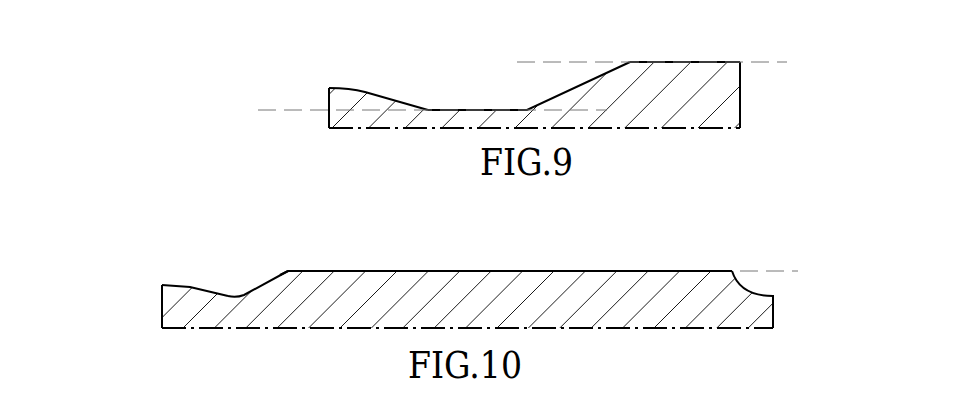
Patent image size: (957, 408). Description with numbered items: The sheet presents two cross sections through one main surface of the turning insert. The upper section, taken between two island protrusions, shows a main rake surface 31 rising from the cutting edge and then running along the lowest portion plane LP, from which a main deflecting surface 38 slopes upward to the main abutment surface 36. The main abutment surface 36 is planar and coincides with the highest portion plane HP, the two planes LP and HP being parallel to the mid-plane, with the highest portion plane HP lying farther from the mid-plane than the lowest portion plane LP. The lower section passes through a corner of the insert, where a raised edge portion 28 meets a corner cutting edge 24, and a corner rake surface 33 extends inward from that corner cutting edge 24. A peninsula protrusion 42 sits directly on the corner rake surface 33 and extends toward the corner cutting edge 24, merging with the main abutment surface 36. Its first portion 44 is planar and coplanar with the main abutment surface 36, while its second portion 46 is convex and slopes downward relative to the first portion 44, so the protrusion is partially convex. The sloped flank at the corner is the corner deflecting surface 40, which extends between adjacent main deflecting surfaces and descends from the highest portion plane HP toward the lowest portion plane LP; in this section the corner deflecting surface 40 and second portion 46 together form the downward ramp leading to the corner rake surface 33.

In FIG. 9, the main rake surface 31 is at (385, 100).
In FIG. 9, the main deflecting surface 38 is at (568, 90).
In FIG. 9, the main abutment surface 36 is at (685, 62).
In FIG. 10, the main abutment surface 36 is at (357, 271).
In FIG. 9, the lowest portion plane LP is at (272, 110).
In FIG. 9, the highest portion plane HP is at (762, 62).
In FIG. 10, the highest portion plane HP is at (763, 271).
In FIG. 10, the corner cutting edge 24 is at (421, 308).
In FIG. 10, the raised edge portion 28 is at (162, 285).
In FIG. 10, the corner rake surface 33 is at (200, 286).
In FIG. 10, the corner deflecting surface 40 is at (252, 243).
In FIG. 10, the second portion of the peninsula protrusion 46 is at (263, 282).
In FIG. 10, the peninsula protrusion 42 is at (278, 268).
In FIG. 10, the first portion of the peninsula protrusion 44 is at (318, 271).